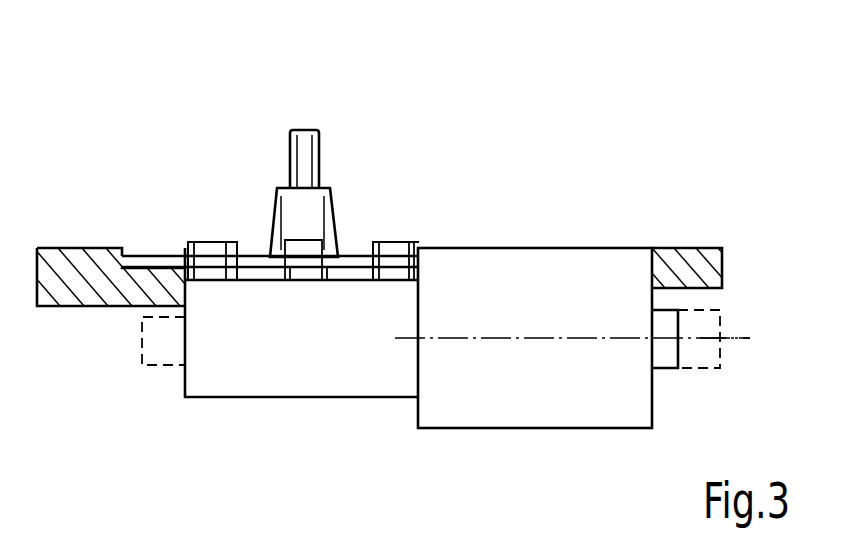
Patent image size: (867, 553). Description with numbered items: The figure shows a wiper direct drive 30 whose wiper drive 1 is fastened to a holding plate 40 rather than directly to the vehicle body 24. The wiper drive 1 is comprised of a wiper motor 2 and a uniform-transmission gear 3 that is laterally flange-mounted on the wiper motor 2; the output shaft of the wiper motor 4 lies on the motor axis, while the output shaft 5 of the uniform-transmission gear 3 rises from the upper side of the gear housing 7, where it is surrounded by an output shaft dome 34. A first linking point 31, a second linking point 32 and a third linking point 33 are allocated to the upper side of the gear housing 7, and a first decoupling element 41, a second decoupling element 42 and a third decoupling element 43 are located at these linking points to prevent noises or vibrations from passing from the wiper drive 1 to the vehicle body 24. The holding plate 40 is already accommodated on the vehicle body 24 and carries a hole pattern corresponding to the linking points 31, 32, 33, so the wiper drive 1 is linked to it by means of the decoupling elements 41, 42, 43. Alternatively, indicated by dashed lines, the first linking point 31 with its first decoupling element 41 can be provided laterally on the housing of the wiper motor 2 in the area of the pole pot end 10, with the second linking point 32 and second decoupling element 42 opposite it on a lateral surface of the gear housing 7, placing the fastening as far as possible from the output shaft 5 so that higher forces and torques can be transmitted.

The wiper drive 1 is at (645, 178).
The wiper direct drive 30 is at (238, 142).
The wiper motor 2 is at (597, 405).
The uniform-transmission gear 3 is at (168, 387).
The output shaft of the wiper motor 4 is at (740, 342).
The output shaft 5 is at (313, 143).
The gear housing 7 is at (283, 398).
The pole pot end 10 is at (665, 358).
The vehicle body 24 is at (710, 250).
The first linking point 31 is at (188, 242).
The second linking point 32 is at (282, 243).
The third linking point 33 is at (405, 247).
The output shaft dome 34 is at (320, 212).
The holding plate 40 is at (138, 262).
The first decoupling element 41 is at (708, 327).
The second decoupling element 42 is at (150, 343).
The third decoupling element 43 is at (396, 261).